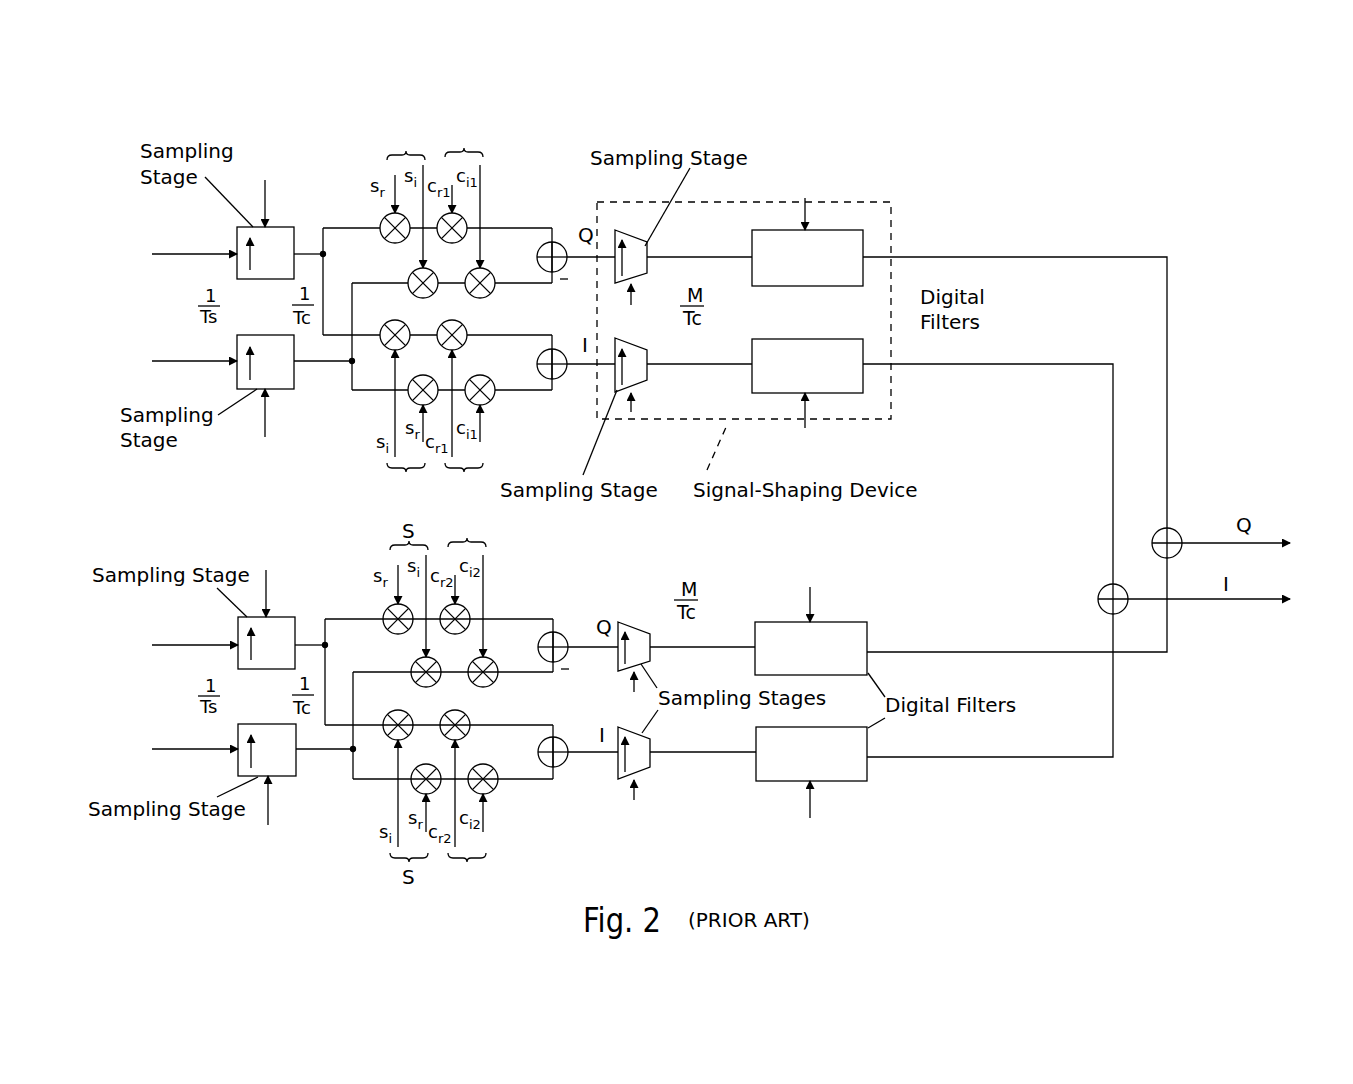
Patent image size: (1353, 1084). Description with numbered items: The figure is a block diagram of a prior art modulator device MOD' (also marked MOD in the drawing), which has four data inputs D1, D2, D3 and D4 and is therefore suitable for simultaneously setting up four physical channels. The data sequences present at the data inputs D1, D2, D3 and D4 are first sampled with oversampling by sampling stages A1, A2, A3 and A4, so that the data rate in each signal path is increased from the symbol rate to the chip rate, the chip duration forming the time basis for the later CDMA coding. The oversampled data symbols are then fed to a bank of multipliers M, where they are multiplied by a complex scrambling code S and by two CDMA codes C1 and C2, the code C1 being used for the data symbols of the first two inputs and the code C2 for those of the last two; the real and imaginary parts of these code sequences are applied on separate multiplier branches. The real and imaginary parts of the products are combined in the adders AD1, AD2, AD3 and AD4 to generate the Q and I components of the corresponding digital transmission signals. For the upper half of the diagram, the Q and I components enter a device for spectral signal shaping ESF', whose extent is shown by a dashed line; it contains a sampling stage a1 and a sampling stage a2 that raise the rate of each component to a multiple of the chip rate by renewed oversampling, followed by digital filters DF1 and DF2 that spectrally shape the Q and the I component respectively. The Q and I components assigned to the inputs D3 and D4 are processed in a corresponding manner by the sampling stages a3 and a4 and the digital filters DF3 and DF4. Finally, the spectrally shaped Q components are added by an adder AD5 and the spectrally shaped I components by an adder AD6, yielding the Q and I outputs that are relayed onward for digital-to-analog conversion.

The sampling stage A1 is at (291, 225).
The sampling stage A2 is at (289, 391).
The sampling stage A3 is at (292, 615).
The sampling stage A4 is at (291, 778).
The adder AD1 is at (553, 241).
The adder AD2 is at (552, 381).
The adder AD3 is at (554, 631).
The adder AD4 is at (553, 769).
The adder AD5 is at (1175, 530).
The adder AD6 is at (1100, 593).
The sampling stage a1 is at (642, 231).
The sampling stage a2 is at (650, 380).
The sampling stage a3 is at (642, 621).
The sampling stage a4 is at (652, 767).
The digital filter DF1 is at (807, 229).
The digital filter DF2 is at (807, 398).
The digital filter DF3 is at (811, 618).
The digital filter DF4 is at (811, 787).
The device for spectral signal shaping ESF' is at (748, 273).
The modulator device MOD' is at (690, 105).
The modulator device MOD is at (1129, 89).
The multiplier M is at (384, 233).
The complex scrambling code S is at (406, 314).
The CDMA code C1 is at (464, 312).
The CDMA code C2 is at (467, 702).
The data input D1 is at (185, 246).
The data input D2 is at (185, 353).
The data input D3 is at (185, 637).
The data input D4 is at (185, 741).